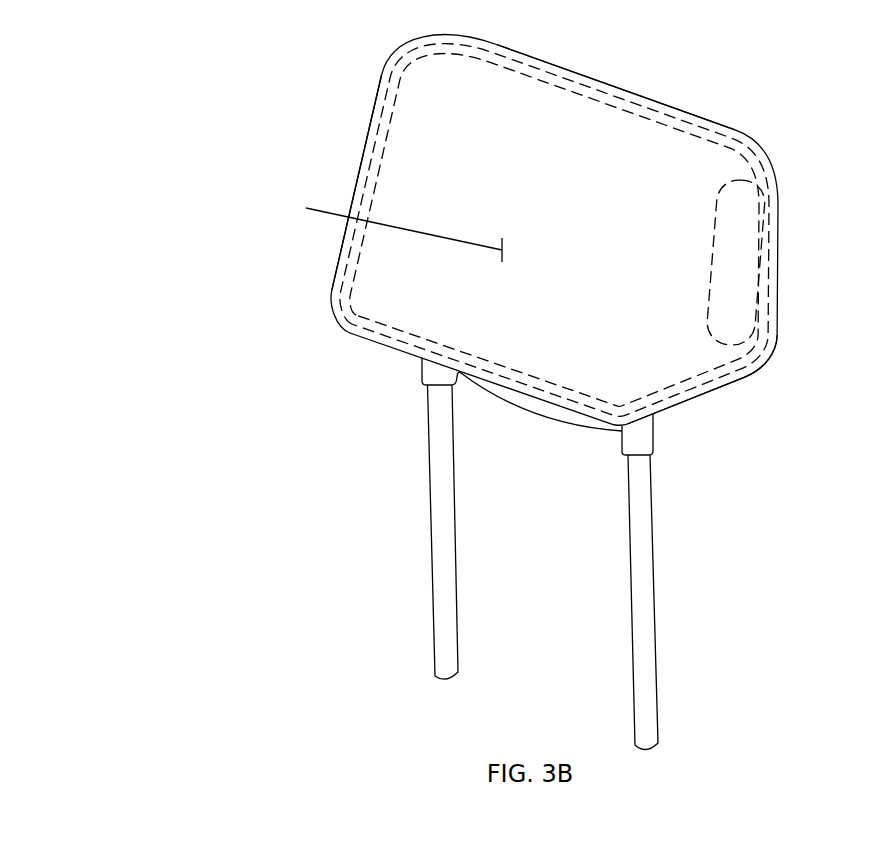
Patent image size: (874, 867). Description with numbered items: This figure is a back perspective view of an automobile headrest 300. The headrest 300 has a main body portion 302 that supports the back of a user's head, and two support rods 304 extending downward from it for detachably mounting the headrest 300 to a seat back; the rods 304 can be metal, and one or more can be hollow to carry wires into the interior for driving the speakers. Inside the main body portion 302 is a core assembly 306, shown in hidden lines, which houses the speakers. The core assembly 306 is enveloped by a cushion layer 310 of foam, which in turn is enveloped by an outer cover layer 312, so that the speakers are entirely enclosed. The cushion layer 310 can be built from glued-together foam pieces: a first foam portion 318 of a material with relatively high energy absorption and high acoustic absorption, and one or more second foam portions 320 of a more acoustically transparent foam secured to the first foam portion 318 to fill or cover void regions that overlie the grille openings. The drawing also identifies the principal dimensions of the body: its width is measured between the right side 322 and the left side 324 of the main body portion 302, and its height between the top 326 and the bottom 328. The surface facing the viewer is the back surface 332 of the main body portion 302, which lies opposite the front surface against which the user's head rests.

The automobile headrest 300 is at (95, 78).
The main body portion 302 is at (380, 81).
The support rods 304 is at (428, 570).
The core assembly 306 is at (382, 160).
The cushion layer 310 is at (377, 122).
The cover layer 312 is at (337, 273).
The first foam portion 318 is at (637, 94).
The second foam portion 320 is at (720, 216).
The right side 322 is at (706, 349).
The left side 324 is at (348, 196).
The top 326 is at (587, 72).
The bottom 328 is at (518, 396).
The back surface 332 is at (306, 208).